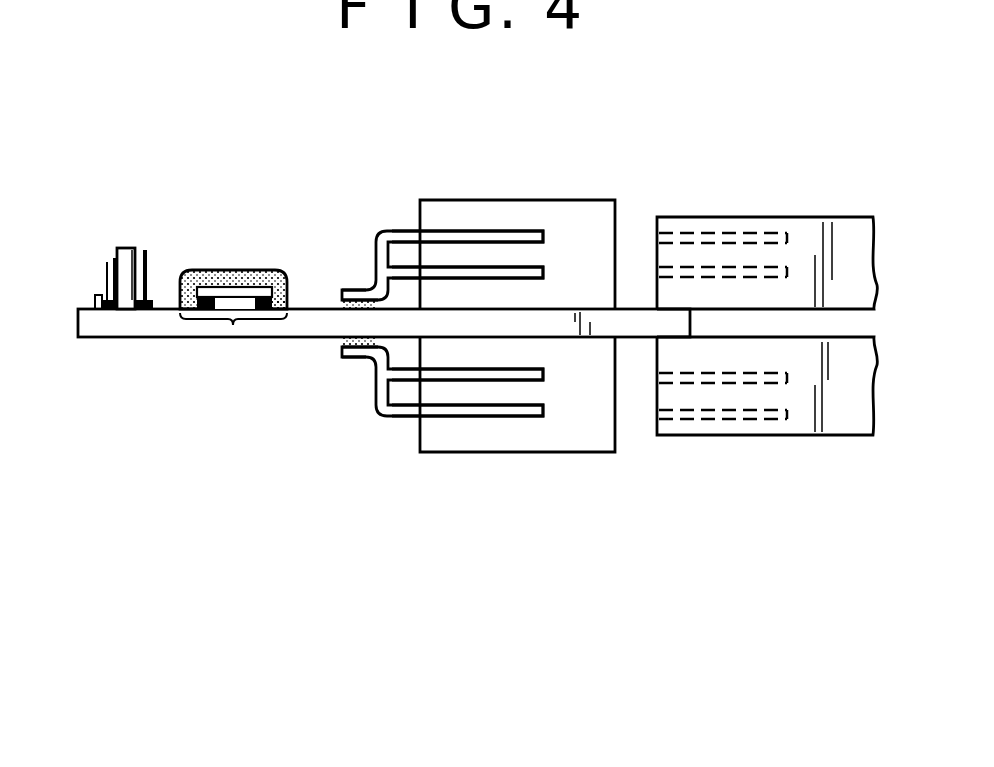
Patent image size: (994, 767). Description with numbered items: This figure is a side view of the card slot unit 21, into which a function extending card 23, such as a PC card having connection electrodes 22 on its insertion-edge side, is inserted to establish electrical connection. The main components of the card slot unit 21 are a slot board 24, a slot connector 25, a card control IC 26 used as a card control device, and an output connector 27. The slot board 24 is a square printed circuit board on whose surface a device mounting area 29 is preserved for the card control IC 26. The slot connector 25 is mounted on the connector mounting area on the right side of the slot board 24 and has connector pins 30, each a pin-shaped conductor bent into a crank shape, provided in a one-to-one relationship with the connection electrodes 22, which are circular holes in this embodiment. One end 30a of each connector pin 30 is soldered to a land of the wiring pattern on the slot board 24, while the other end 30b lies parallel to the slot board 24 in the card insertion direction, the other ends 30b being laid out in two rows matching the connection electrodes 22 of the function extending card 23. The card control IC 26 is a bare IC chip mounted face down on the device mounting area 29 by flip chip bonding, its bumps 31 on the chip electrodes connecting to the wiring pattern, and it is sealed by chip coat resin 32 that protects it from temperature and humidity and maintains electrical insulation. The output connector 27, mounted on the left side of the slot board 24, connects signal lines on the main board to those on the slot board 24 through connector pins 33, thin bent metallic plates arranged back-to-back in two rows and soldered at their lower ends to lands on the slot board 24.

The card slot unit 21 is at (180, 352).
The connection electrodes 22 is at (692, 233).
The function extending card 23 is at (843, 230).
The slot board 24 is at (113, 323).
The slot connector 25 is at (580, 215).
The card control IC 26 is at (235, 293).
The output connector 27 is at (108, 262).
The device mounting area 29 is at (233, 326).
The connector pins 30 is at (388, 230).
The one end of connector pin 30a is at (355, 290).
The other end of connector pin 30b is at (515, 234).
The bumps 31 is at (288, 298).
The chip coat resin 32 is at (197, 272).
The connector pins 33 is at (113, 277).